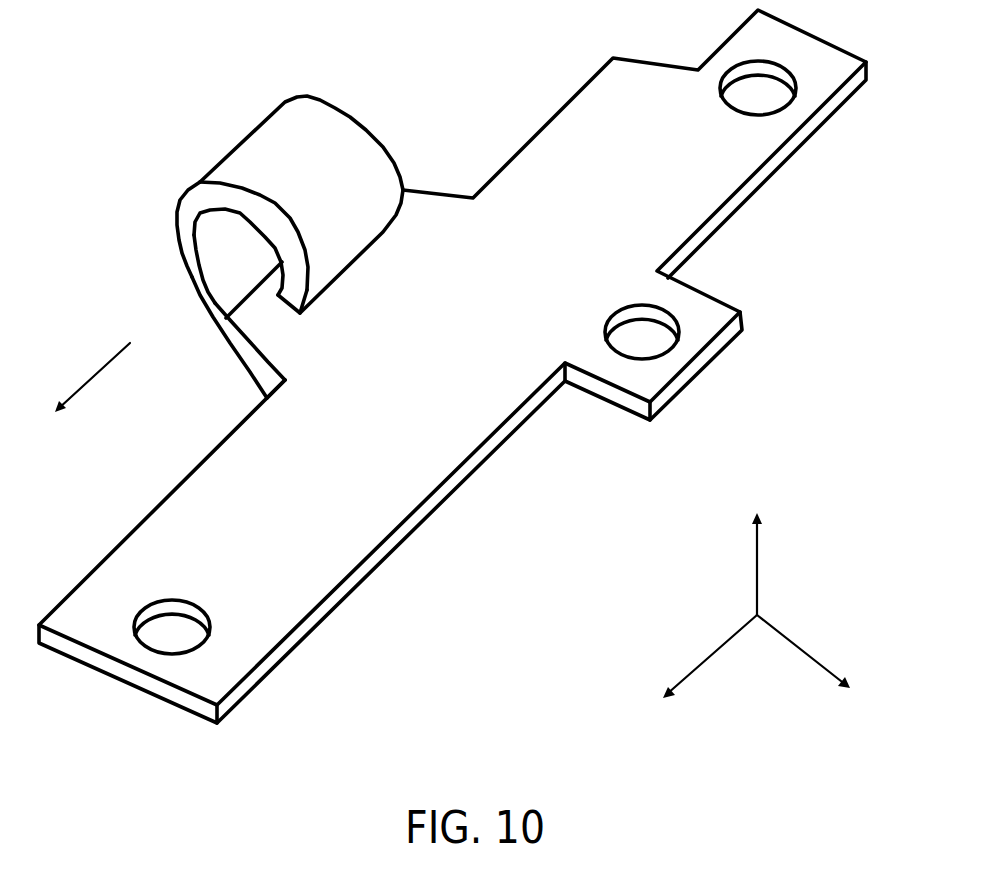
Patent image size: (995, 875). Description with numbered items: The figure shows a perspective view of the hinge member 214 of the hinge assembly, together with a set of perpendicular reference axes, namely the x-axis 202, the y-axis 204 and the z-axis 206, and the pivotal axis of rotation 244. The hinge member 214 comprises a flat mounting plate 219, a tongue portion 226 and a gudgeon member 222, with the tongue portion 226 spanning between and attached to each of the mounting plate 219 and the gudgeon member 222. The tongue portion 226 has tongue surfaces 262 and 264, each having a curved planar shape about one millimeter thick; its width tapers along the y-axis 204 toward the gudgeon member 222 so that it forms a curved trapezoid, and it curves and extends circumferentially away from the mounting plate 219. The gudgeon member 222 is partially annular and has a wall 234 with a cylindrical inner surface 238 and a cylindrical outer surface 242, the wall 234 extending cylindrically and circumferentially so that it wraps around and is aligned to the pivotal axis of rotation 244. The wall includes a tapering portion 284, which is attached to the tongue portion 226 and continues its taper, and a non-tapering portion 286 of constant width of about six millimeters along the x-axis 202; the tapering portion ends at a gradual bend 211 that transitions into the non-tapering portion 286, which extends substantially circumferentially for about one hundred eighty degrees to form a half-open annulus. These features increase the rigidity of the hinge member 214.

The hinge member 214 is at (157, 65).
The mounting plate 219 is at (343, 487).
The gudgeon member 222 is at (232, 142).
The cylindrical outer surface 242 is at (280, 130).
The non-tapering portion 286 is at (270, 178).
The wall 234 is at (200, 182).
The gradual bend 211 is at (175, 225).
The tapering portion 284 is at (212, 280).
The cylindrical inner surface 238 is at (222, 298).
The tongue surface 264 is at (238, 353).
The tongue portion 226 is at (277, 353).
The tongue surface 262 is at (287, 327).
The pivotal axis of rotation 244 is at (98, 368).
The x-axis 202 is at (705, 662).
The y-axis 204 is at (810, 653).
The z-axis 206 is at (758, 548).